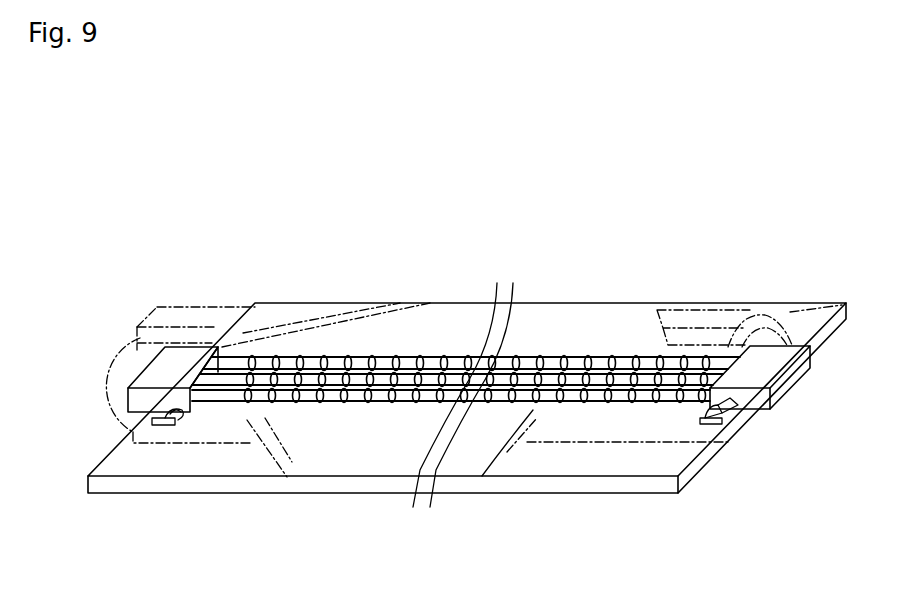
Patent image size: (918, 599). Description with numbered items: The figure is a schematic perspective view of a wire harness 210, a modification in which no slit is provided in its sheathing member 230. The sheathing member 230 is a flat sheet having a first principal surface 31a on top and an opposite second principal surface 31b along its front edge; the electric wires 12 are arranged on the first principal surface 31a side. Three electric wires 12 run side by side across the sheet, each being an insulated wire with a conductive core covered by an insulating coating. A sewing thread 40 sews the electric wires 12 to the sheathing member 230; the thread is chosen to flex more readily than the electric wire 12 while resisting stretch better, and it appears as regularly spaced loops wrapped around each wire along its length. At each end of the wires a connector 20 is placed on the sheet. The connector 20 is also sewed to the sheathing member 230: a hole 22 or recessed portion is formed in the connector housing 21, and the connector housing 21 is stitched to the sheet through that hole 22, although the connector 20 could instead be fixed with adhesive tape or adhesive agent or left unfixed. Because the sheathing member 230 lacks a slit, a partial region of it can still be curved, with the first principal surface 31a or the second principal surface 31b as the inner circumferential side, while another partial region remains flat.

The wire harness 210 is at (231, 178).
The sheathing member 230 is at (570, 317).
The first principal surface 31a is at (663, 457).
The second principal surface 31b is at (647, 493).
The connector 20 is at (143, 365).
The connector housing 21 is at (130, 403).
The hole 22 is at (150, 417).
The electric wire 12 is at (403, 404).
The sewing thread 40 is at (365, 358).